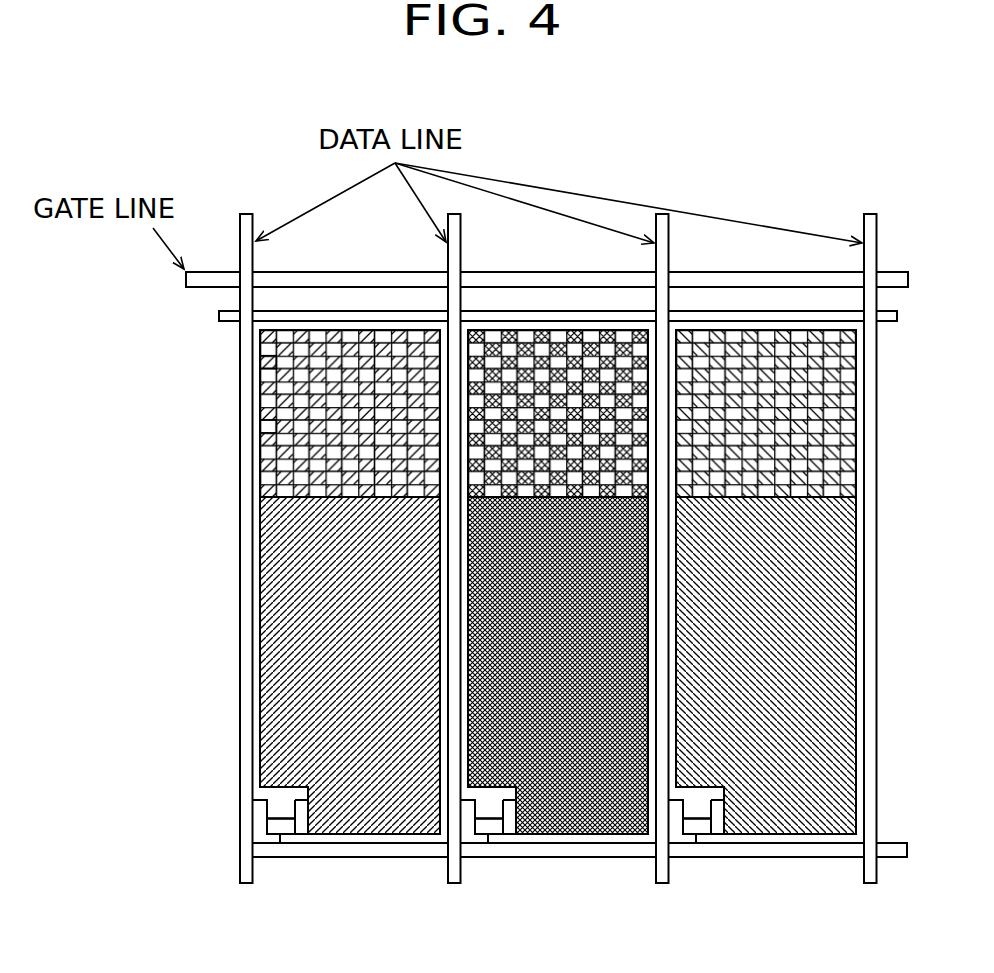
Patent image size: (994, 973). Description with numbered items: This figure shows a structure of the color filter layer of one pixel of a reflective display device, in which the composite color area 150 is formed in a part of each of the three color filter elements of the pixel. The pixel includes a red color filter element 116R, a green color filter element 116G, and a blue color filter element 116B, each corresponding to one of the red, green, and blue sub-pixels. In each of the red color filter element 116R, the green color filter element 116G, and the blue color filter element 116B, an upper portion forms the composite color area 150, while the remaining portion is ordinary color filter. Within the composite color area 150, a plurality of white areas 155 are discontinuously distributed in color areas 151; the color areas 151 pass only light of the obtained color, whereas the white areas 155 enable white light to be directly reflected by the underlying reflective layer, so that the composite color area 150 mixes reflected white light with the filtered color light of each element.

The red color filter element 116R is at (241, 637).
The green color filter element 116G is at (553, 770).
The blue color filter element 116B is at (760, 770).
The composite color area 150 is at (241, 413).
The color areas 151 is at (268, 360).
The white areas 155 is at (268, 421).